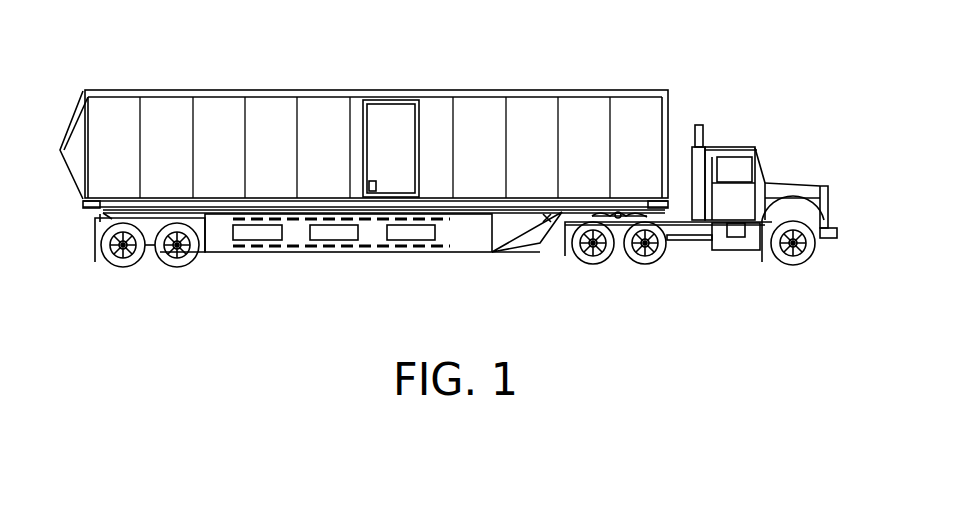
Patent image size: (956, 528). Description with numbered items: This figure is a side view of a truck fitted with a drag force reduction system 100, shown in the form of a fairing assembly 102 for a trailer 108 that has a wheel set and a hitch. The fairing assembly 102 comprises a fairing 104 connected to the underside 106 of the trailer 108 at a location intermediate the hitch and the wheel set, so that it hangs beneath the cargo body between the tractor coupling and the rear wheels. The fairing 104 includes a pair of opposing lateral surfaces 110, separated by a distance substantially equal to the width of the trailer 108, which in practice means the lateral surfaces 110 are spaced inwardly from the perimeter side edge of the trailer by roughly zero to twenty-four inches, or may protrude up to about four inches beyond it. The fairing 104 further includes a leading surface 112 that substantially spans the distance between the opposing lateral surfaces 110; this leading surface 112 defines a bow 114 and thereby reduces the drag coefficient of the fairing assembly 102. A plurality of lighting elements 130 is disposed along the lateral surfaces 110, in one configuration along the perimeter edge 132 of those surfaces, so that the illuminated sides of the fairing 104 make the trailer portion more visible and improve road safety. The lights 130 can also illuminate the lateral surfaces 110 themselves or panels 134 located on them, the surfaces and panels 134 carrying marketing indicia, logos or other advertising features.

The drag force reduction system 100 is at (165, 60).
The fairing assembly 102 is at (250, 300).
The fairing 104 is at (483, 236).
The underside 106 is at (378, 216).
The trailer 108 is at (483, 112).
The opposing lateral surfaces 110 is at (373, 233).
The leading surface 112 is at (543, 228).
The bow 114 is at (528, 251).
The lighting elements 130 is at (278, 248).
The perimeter edge 132 is at (297, 217).
The panels 134 is at (233, 228).